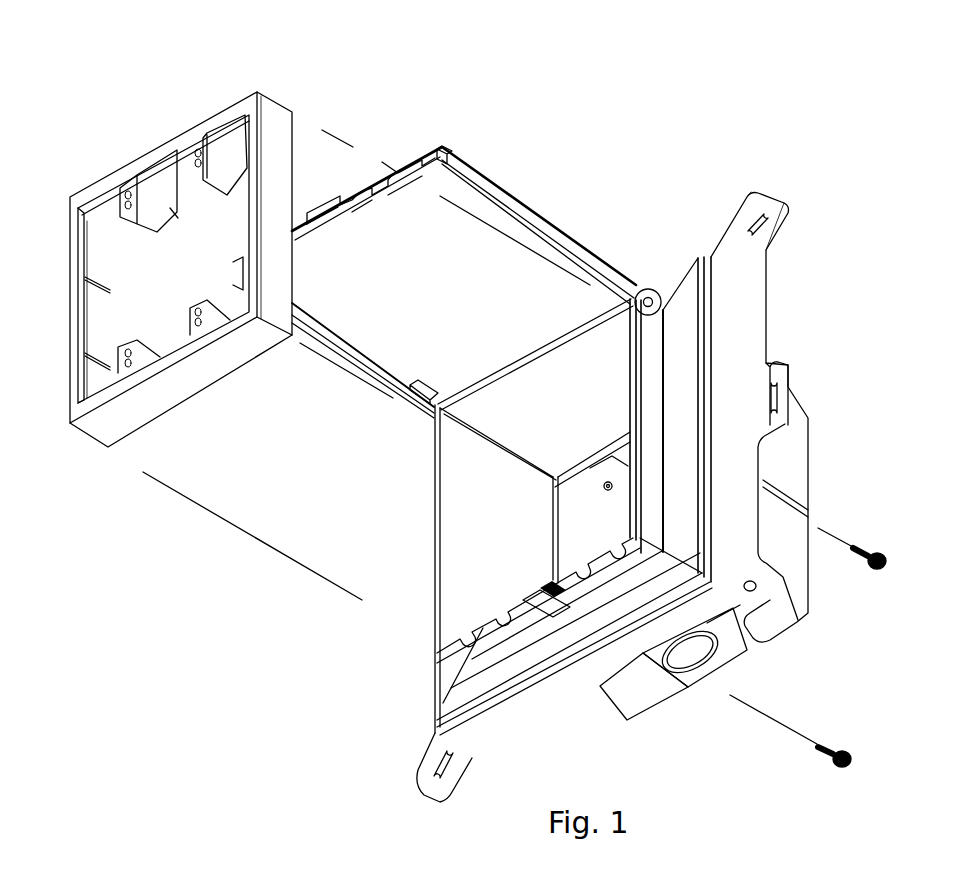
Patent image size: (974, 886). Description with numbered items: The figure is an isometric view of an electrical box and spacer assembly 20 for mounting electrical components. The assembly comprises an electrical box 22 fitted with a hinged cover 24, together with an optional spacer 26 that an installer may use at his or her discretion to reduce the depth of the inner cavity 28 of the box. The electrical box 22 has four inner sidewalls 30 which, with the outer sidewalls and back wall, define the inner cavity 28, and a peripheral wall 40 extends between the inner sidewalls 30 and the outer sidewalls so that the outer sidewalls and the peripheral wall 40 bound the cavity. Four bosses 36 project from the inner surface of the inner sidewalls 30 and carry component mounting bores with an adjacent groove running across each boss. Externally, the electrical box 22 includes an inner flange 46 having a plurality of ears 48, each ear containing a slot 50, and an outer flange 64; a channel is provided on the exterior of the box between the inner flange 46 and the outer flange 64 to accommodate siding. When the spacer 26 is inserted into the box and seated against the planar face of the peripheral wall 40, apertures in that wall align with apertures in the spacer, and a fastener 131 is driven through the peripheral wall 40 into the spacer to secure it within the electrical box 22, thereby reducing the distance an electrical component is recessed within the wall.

The electrical box and spacer assembly 20 is at (266, 684).
The electrical box 22 is at (669, 475).
The hinged cover 24 is at (470, 170).
The spacer 26 is at (262, 92).
The inner cavity 28 is at (519, 516).
The inner sidewalls 30 is at (786, 460).
The bosses 36 is at (618, 495).
The peripheral wall 40 is at (604, 457).
The inner flange 46 is at (753, 412).
The ears 48 is at (816, 200).
The slot 50 is at (757, 234).
The outer flange 64 is at (694, 431).
The fastener 131 is at (864, 567).